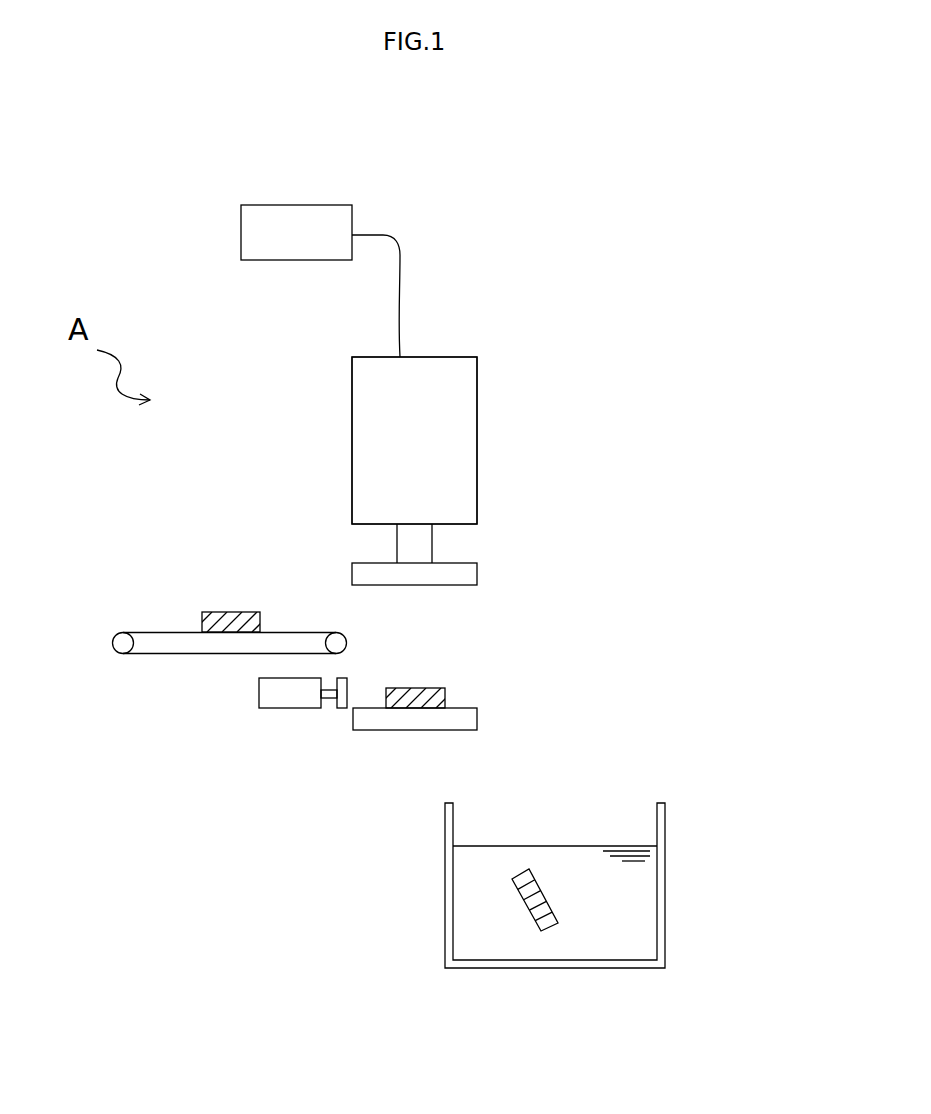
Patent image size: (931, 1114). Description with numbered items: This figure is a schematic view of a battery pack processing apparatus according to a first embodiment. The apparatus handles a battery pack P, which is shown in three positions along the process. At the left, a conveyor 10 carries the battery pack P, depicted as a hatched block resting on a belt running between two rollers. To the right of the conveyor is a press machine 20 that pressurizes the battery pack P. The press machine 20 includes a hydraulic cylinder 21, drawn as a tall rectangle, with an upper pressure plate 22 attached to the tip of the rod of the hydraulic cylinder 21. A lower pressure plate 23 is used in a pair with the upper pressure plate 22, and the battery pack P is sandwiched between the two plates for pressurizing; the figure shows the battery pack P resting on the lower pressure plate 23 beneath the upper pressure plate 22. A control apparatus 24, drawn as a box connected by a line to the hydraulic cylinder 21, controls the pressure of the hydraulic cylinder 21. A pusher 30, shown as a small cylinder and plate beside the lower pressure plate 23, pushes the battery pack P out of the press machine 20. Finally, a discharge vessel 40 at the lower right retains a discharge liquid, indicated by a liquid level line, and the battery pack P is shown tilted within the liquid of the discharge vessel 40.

The conveyor 10 is at (162, 655).
The press machine 20 is at (605, 382).
The hydraulic cylinder 21 is at (450, 437).
The upper pressure plate 22 is at (468, 575).
The lower pressure plate 23 is at (478, 718).
The control apparatus 24 is at (285, 205).
The pusher 30 is at (278, 710).
The discharge vessel 40 is at (660, 897).
The battery pack P is at (232, 612).